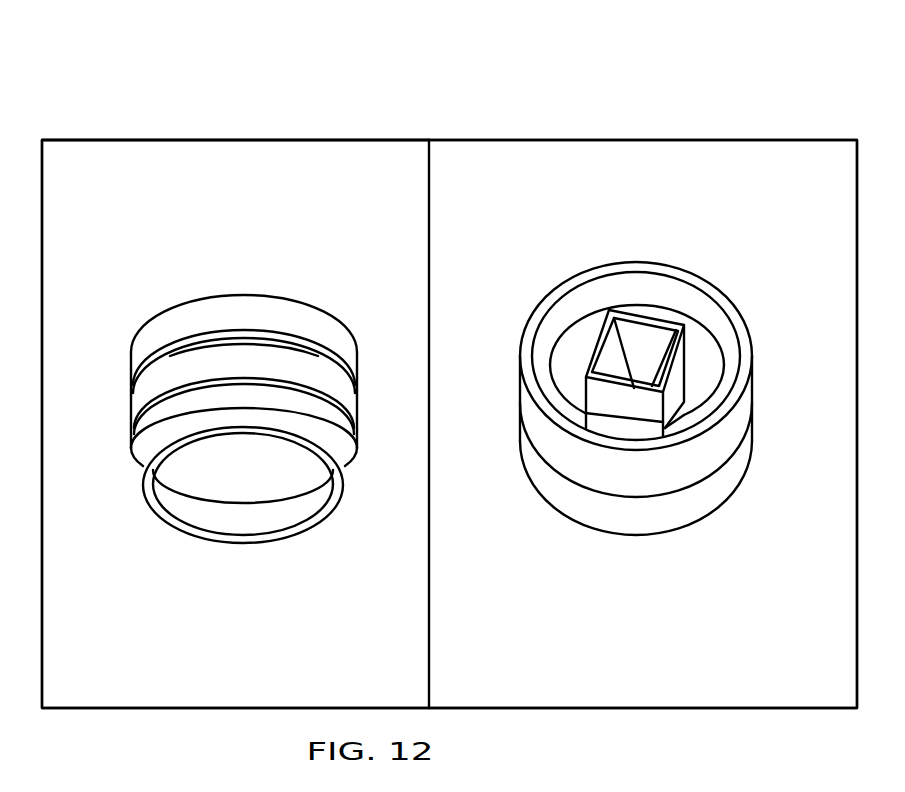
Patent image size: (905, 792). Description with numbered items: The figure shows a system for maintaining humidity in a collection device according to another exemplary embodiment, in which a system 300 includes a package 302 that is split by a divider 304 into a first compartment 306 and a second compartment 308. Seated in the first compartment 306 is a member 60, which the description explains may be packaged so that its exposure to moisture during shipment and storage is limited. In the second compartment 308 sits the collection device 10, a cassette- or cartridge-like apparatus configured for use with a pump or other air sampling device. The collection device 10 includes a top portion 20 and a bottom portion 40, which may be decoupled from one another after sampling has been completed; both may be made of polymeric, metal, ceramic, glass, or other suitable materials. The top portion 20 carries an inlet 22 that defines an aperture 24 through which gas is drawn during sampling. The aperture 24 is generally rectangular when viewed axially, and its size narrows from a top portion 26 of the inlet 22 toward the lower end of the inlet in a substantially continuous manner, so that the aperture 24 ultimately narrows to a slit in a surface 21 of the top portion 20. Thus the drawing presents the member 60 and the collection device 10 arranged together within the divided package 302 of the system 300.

The packaging kit 300 is at (721, 108).
The package 302 is at (100, 139).
The divider 304 is at (430, 182).
The first compartment 306 is at (182, 152).
The second compartment 308 is at (595, 158).
The member 60 is at (112, 340).
The collection device 10 is at (651, 421).
The top portion 20 is at (738, 412).
The surface 21 is at (568, 400).
The inlet 22 is at (682, 365).
The aperture 24 is at (648, 350).
The top portion of inlet 26 is at (601, 345).
The bottom portion 40 is at (713, 497).